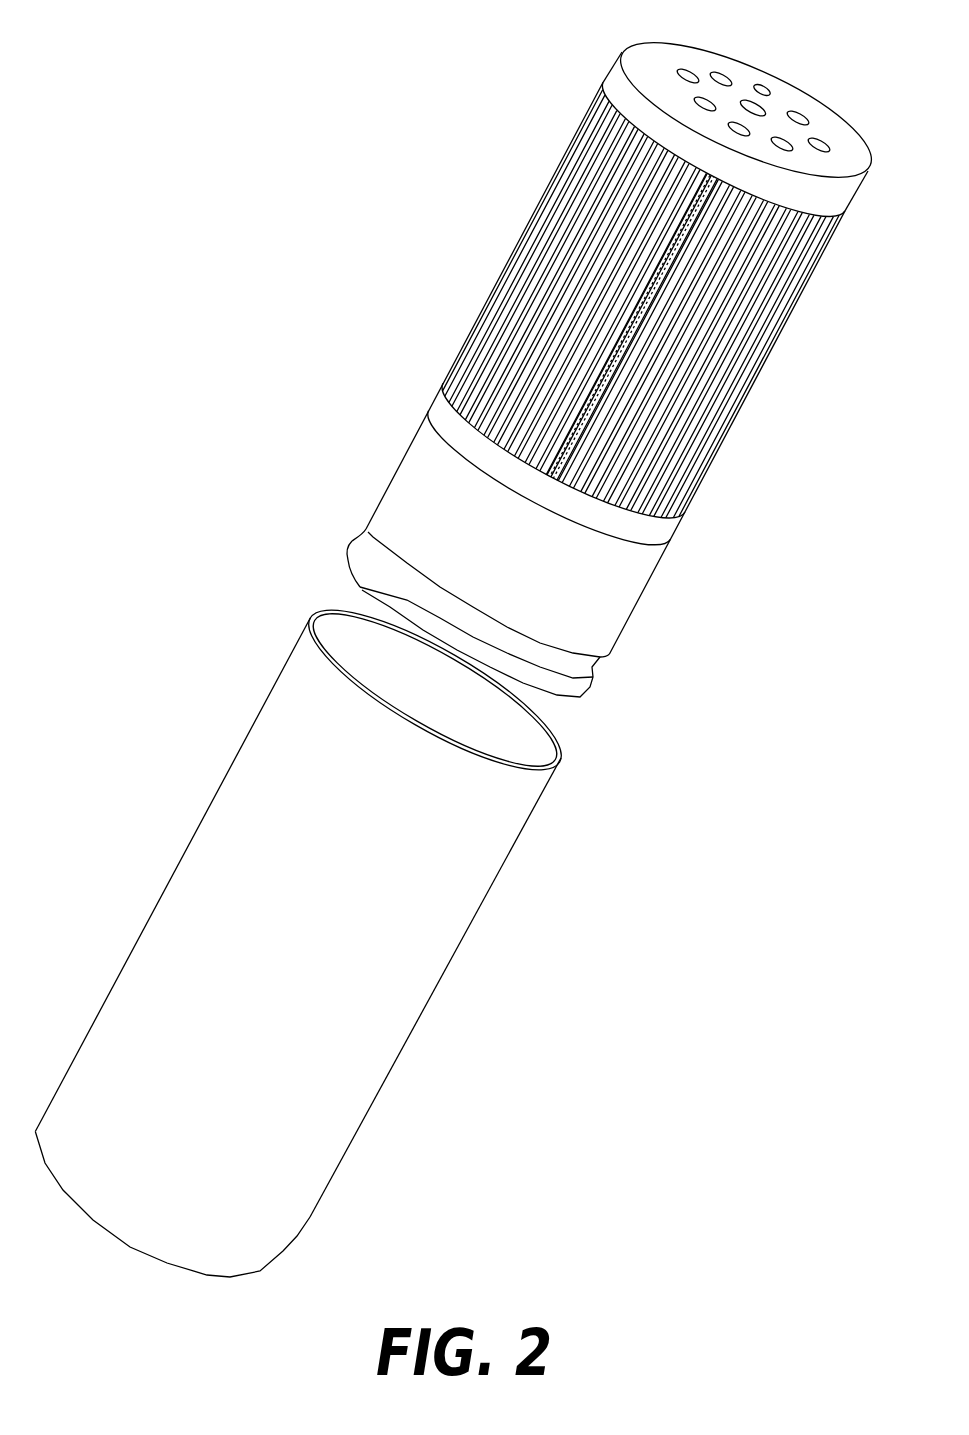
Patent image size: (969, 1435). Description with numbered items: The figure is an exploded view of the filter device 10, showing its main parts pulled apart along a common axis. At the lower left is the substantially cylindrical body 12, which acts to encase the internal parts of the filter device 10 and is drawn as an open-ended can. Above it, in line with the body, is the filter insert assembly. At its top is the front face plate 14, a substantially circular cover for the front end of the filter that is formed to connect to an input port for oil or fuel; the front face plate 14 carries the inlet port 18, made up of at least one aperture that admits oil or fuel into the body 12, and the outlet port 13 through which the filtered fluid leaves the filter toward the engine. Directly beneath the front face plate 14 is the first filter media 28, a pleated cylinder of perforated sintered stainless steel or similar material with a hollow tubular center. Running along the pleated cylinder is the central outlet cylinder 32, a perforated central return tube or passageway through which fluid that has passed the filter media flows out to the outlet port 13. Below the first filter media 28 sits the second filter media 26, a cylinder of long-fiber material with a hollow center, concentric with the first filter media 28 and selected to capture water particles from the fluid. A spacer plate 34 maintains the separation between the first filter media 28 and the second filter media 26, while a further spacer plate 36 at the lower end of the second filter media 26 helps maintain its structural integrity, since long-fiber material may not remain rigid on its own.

The filter device 10 is at (208, 528).
The cylindrical body 12 is at (91, 1117).
The outlet port 13 is at (753, 105).
The front face plate 14 is at (828, 187).
The inlet port 18 is at (824, 139).
The second filter media 26 is at (580, 586).
The first filter media 28 is at (742, 347).
The central outlet cylinder 32 is at (601, 409).
The spacer plate 34 is at (448, 420).
The spacer plate 36 is at (357, 571).